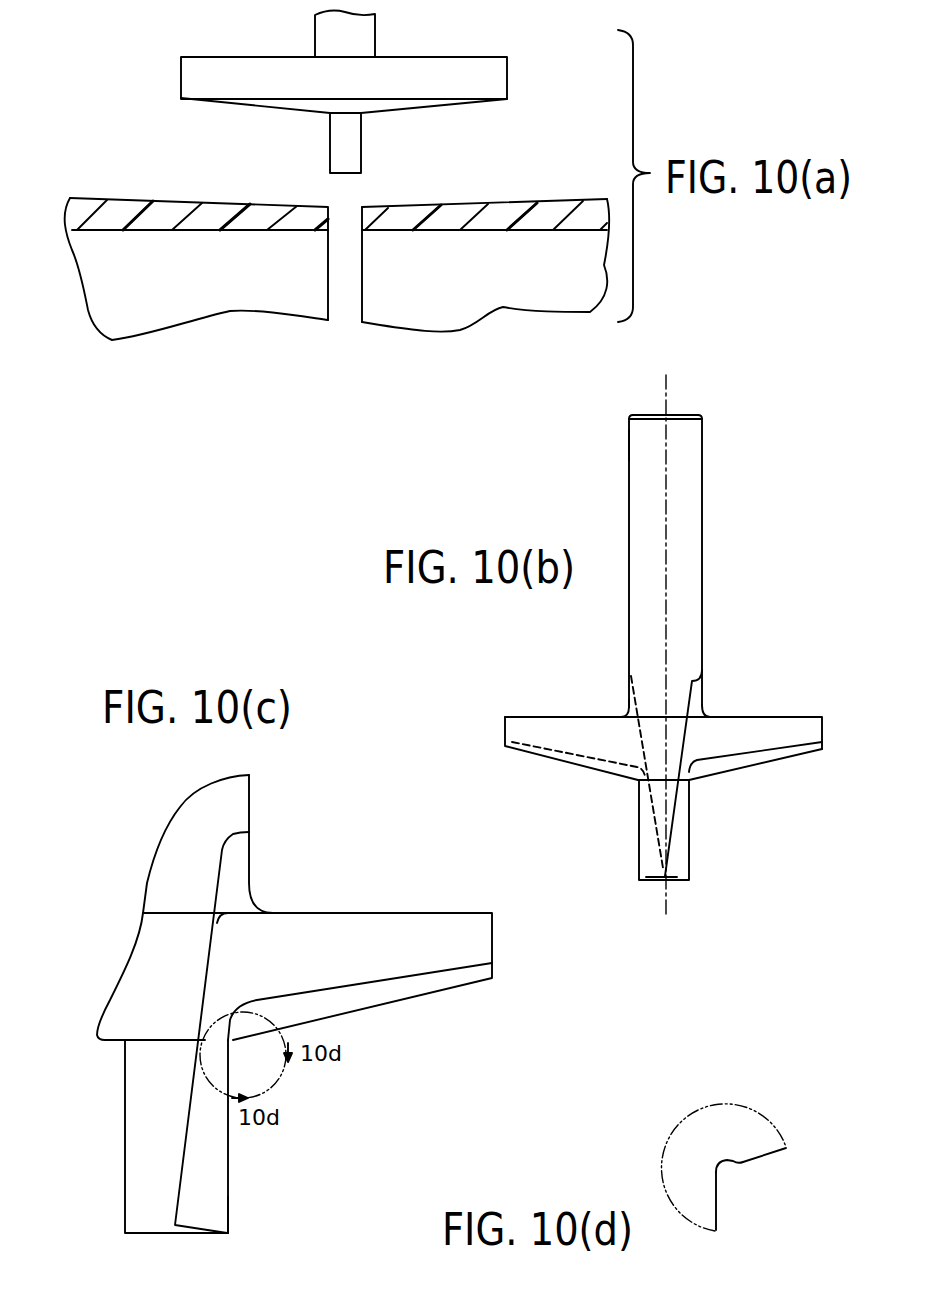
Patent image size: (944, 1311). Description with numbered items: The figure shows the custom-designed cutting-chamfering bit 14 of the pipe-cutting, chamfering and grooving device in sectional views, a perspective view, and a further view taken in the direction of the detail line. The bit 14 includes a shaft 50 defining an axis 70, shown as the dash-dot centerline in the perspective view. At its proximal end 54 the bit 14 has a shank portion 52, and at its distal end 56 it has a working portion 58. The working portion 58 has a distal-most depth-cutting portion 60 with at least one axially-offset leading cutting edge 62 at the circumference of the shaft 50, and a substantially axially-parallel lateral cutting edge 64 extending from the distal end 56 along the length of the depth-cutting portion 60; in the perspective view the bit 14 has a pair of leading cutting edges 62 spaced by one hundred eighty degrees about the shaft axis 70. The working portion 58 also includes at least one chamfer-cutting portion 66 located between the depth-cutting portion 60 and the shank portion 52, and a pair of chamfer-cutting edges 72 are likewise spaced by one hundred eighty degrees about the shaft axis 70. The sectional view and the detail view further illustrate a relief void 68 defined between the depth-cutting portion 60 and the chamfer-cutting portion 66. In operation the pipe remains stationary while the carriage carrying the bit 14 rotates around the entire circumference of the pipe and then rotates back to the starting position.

In FIG. 10B, the cutting-chamfering bit 14 is at (565, 508).
In FIG. 10C, the cutting-chamfering bit 14 is at (137, 844).
In FIG. 10B, the shaft 50 is at (696, 480).
In FIG. 10B, the shank portion 52 is at (637, 455).
In FIG. 10C, the shank portion 52 is at (252, 848).
In FIG. 10B, the proximal end 54 is at (634, 431).
In FIG. 10B, the distal end 56 is at (645, 868).
In FIG. 10C, the distal end 56 is at (133, 1158).
In FIG. 10B, the working portion 58 is at (560, 742).
In FIG. 10C, the working portion 58 is at (478, 942).
In FIG. 10C, the depth-cutting portion 60 is at (260, 1043).
In FIG. 10B, the leading cutting edge 62 is at (657, 883).
In FIG. 10C, the leading cutting edge 62 is at (200, 1237).
In FIG. 10C, the lateral cutting edge 64 is at (228, 1197).
In FIG. 10D, the lateral cutting edge 64 is at (716, 1205).
In FIG. 10C, the chamfer-cutting portion 66 is at (372, 1010).
In FIG. 10D, the chamfer-cutting portion 66 is at (765, 1158).
In FIG. 10D, the relief void 68 is at (728, 1167).
In FIG. 10B, the axis 70 is at (665, 900).
In FIG. 10B, the chamfer-cutting edges 72 is at (595, 767).